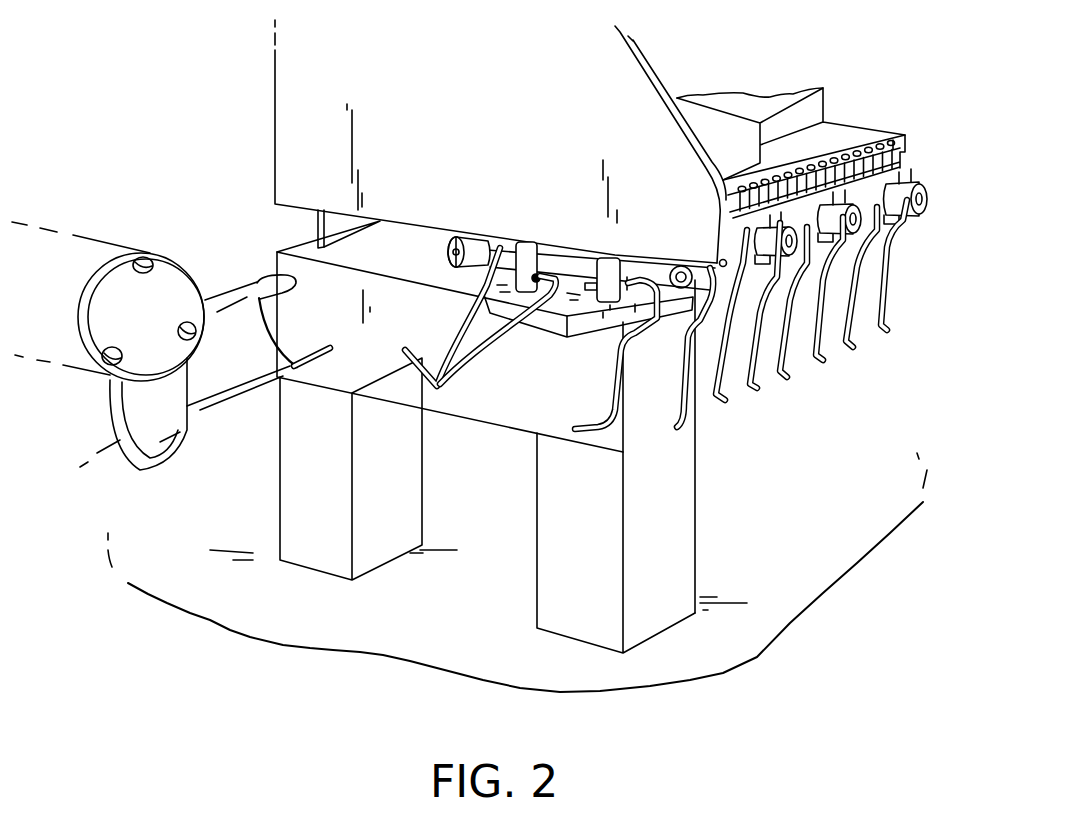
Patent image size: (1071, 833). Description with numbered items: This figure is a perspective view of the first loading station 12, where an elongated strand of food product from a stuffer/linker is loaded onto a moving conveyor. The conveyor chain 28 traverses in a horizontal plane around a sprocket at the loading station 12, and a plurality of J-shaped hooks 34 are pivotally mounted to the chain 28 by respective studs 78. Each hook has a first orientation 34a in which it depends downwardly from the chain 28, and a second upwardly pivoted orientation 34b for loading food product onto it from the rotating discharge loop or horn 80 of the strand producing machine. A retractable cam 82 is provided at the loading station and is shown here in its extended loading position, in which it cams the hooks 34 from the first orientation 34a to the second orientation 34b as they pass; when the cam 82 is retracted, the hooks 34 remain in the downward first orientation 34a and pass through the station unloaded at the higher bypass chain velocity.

The first loading station 12 is at (511, 95).
The conveyor chain 28 is at (905, 158).
The J-shaped hooks 34 is at (887, 320).
The first orientation of hook 34a is at (677, 422).
The second upwardly pivoted orientation of hook 34b is at (455, 362).
The studs 78 is at (603, 256).
The rotating discharge loop or horn 80 is at (217, 383).
The retractable cam 82 is at (550, 327).